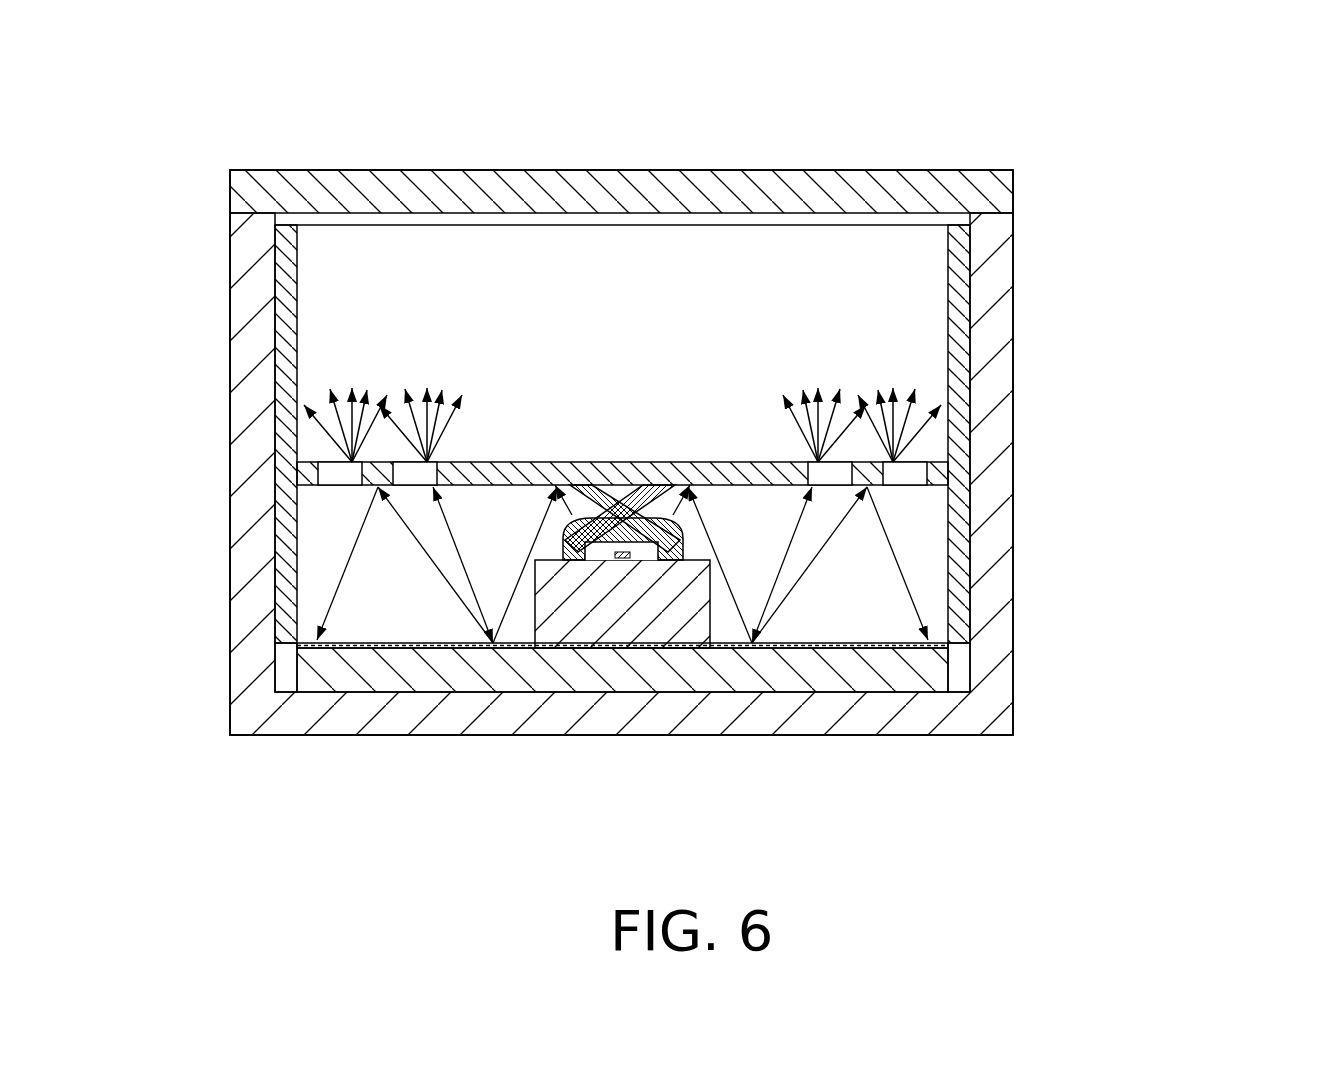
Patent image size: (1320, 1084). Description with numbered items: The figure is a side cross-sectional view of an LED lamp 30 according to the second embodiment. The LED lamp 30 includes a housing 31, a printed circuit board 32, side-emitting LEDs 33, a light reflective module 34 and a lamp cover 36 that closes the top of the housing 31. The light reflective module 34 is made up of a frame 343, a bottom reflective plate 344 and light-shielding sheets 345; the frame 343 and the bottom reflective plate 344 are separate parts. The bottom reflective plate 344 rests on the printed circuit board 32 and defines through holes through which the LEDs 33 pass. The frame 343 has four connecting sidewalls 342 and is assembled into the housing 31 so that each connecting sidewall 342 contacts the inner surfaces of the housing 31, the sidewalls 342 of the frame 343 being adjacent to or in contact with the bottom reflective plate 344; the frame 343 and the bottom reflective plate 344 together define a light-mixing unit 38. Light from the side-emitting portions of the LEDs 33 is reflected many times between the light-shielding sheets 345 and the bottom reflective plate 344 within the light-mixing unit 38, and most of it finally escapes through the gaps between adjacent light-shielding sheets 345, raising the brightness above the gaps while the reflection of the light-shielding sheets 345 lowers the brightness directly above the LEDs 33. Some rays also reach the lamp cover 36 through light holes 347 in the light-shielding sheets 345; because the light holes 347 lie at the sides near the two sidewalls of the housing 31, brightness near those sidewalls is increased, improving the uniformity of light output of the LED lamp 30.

The LED lamp 30 is at (699, 86).
The housing 31 is at (257, 605).
The printed circuit board 32 is at (817, 677).
The side-emitting LEDs 33 is at (660, 622).
The light reflective module 34 is at (1245, 318).
The lamp cover 36 is at (870, 192).
The light-mixing unit 38 is at (332, 534).
The side walls 342 is at (963, 290).
The frame 343 is at (1150, 240).
The bottom reflective plate 344 is at (913, 630).
The light-shielding sheets 345 is at (719, 402).
The light holes 347 is at (912, 473).